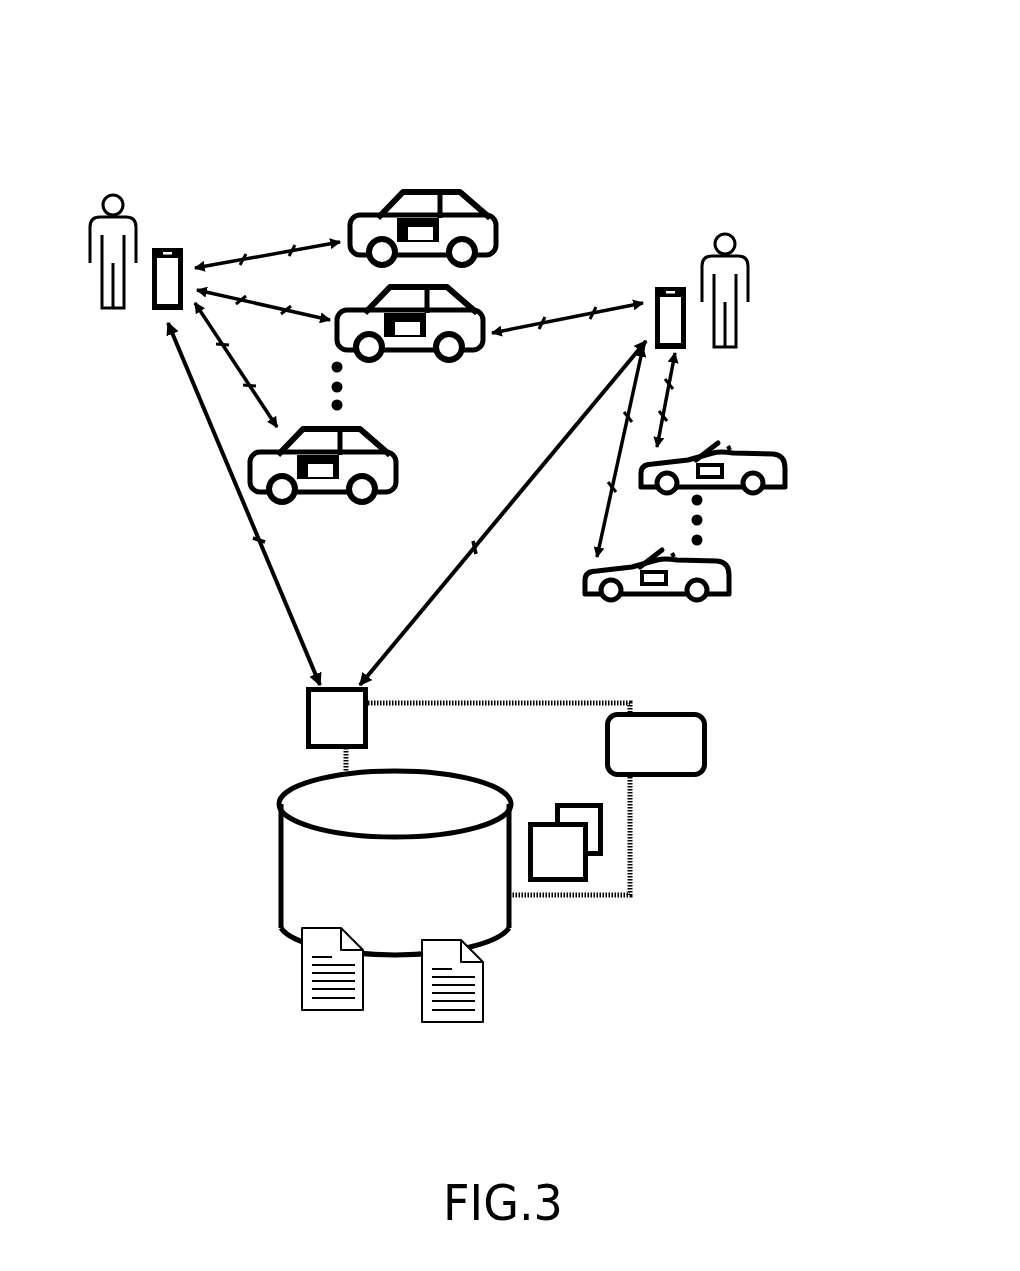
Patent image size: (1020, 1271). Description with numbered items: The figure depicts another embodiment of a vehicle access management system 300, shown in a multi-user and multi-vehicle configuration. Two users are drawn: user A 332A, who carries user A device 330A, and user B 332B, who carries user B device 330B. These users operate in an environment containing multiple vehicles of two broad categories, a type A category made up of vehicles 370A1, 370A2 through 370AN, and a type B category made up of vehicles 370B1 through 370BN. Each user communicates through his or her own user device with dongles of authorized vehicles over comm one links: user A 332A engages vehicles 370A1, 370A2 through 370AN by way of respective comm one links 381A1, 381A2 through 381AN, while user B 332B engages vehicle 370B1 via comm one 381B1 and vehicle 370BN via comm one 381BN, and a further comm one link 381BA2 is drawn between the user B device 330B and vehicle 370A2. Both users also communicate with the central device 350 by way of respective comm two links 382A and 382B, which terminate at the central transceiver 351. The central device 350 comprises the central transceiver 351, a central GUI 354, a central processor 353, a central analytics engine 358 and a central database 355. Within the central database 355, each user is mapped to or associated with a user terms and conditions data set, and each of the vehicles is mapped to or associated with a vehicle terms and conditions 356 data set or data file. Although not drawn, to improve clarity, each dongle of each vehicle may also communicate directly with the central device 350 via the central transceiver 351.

The vehicle access management system 300 is at (243, 40).
The user A device 330A is at (163, 240).
The user B device 330B is at (670, 280).
The user A 332A is at (128, 218).
The user B 332B is at (760, 287).
The central device 350 is at (632, 788).
The central transceiver 351 is at (305, 723).
The central processor 353 is at (588, 877).
The central GUI 354 is at (707, 742).
The central database 355 is at (275, 845).
The vehicle terms and conditions 356 is at (438, 1027).
The central analytics engine 358 is at (605, 827).
The vehicle 370A1 is at (492, 207).
The vehicle 370A2 is at (403, 355).
The vehicle 370AN is at (312, 490).
The vehicle 370B1 is at (730, 492).
The vehicle 370BN is at (667, 598).
The comm one 381A1 is at (268, 268).
The comm one 381A2 is at (263, 322).
The comm one 381AN is at (232, 367).
The comm one 381B1 is at (686, 400).
The comm one 381BN is at (602, 452).
The communication link between device B and vehicle A2 381BA2 is at (567, 301).
The comm two 382A is at (265, 602).
The comm two 382B is at (454, 572).